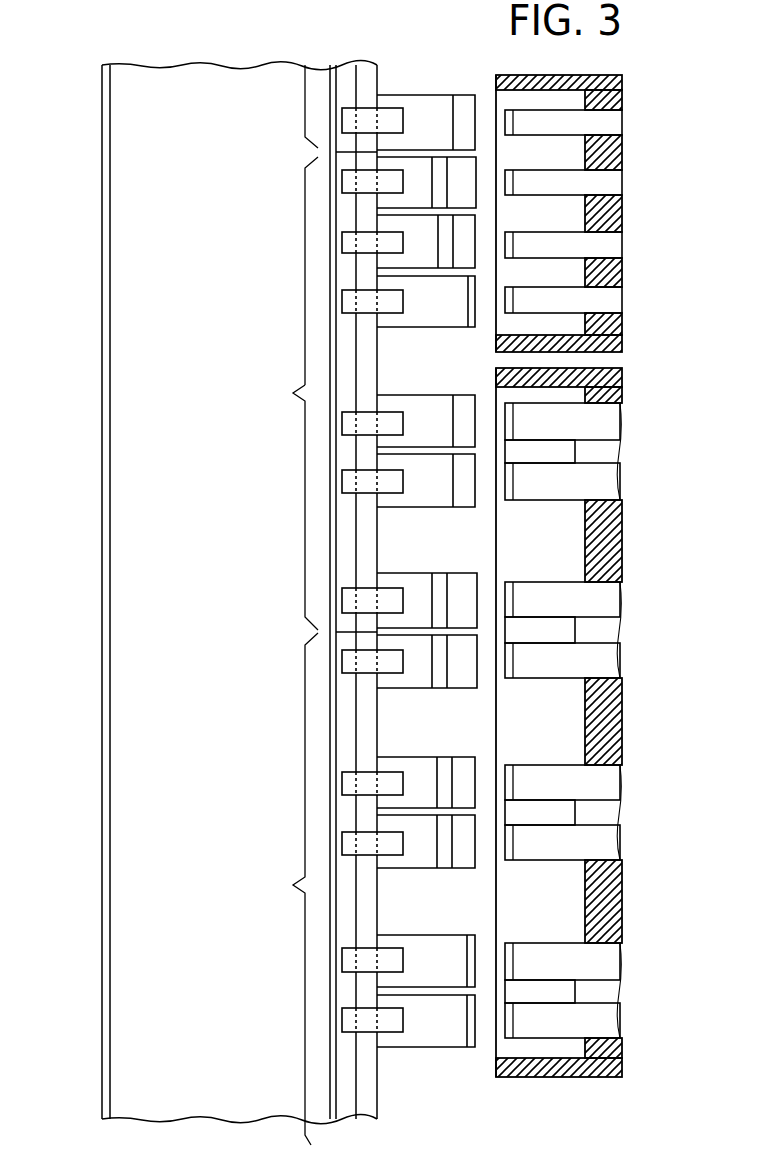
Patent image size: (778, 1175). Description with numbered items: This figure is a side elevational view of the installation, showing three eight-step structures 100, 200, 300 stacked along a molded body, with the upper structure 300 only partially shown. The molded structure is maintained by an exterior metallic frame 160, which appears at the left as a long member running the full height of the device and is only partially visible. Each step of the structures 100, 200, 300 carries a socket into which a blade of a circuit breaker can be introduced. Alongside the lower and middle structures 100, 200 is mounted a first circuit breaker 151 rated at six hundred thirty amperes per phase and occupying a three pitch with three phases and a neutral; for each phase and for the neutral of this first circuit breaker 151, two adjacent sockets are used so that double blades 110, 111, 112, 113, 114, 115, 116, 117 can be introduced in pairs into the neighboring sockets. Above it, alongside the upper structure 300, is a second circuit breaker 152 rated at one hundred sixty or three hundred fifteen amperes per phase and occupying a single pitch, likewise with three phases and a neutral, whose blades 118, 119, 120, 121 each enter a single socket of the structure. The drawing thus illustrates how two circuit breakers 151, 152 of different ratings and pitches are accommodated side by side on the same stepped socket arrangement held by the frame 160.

The eight-step structure 100 is at (370, 889).
The eight-step structure 200 is at (370, 505).
The eight-step structure 300 is at (372, 225).
The double blade 110 is at (508, 1021).
The double blade 111 is at (508, 962).
The double blade 112 is at (508, 846).
The double blade 113 is at (508, 782).
The double blade 114 is at (508, 664).
The double blade 115 is at (508, 603).
The double blade 116 is at (508, 486).
The double blade 117 is at (508, 423).
The blade 118 is at (512, 311).
The blade 119 is at (512, 256).
The blade 120 is at (512, 183).
The blade 121 is at (512, 123).
The first circuit breaker 151 is at (620, 736).
The second circuit breaker 152 is at (627, 259).
The exterior metallic frame 160 is at (103, 260).